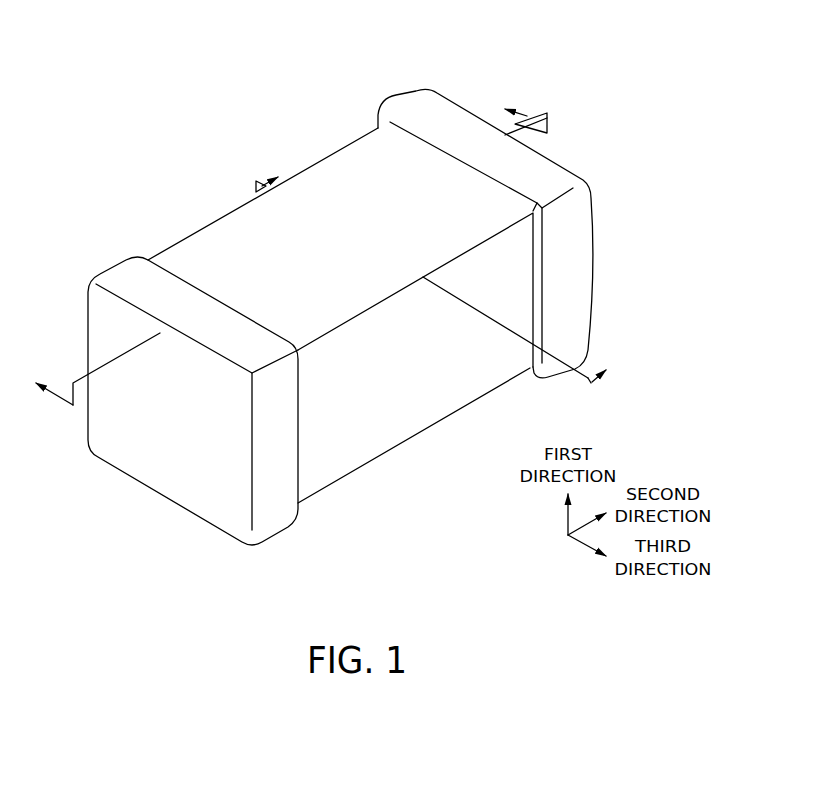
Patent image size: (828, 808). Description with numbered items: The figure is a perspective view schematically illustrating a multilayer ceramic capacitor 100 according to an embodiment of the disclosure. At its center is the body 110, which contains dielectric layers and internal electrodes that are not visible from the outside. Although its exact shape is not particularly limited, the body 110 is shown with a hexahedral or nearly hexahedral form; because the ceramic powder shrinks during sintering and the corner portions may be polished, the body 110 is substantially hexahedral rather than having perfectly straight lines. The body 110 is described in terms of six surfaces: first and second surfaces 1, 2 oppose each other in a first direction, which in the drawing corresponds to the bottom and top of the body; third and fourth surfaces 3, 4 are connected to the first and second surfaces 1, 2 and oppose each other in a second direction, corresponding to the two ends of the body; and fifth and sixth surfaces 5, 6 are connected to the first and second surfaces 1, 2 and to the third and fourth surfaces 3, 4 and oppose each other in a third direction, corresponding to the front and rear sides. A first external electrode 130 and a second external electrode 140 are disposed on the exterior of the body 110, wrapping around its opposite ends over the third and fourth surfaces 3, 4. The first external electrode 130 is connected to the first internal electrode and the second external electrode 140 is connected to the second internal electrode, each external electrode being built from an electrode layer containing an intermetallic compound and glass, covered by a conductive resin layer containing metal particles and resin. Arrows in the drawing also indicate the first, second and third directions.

The multilayer ceramic capacitor 100 is at (141, 21).
The body 110 is at (309, 187).
The first external electrode 130 is at (128, 276).
The second external electrode 140 is at (413, 110).
The first surface 1 is at (372, 463).
The second surface 2 is at (375, 189).
The third surface 3 is at (167, 458).
The fourth surface 4 is at (456, 127).
The fifth surface 5 is at (405, 408).
The sixth surface 6 is at (203, 233).